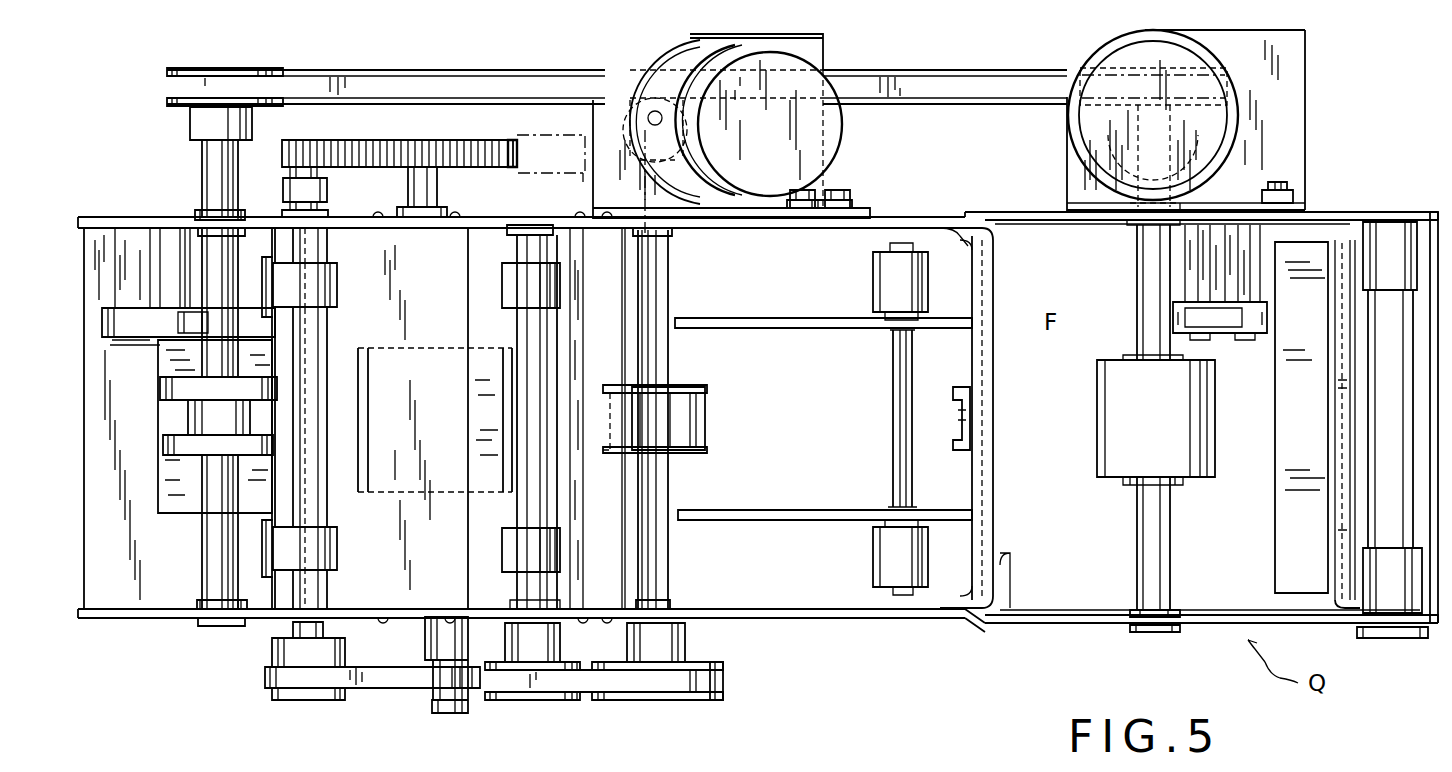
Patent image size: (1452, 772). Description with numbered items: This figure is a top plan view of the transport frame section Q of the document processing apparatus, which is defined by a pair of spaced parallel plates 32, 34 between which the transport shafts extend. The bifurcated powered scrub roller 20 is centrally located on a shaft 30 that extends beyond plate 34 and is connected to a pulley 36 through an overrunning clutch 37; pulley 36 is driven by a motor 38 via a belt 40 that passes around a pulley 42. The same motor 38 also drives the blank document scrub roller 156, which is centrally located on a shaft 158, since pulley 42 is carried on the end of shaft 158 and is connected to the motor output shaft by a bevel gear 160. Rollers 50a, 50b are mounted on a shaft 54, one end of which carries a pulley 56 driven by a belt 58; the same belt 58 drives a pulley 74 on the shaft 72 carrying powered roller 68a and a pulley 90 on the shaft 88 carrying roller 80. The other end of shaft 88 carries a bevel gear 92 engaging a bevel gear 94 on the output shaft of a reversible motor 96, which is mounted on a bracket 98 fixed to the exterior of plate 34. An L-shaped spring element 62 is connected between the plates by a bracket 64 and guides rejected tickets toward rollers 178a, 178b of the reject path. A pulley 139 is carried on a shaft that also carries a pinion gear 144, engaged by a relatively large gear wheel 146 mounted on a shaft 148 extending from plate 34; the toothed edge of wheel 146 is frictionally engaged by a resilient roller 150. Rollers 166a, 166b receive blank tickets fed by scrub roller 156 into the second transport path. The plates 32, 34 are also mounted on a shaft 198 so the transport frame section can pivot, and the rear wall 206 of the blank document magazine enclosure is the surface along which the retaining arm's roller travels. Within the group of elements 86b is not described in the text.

The bifurcated powered scrub roller 20 is at (172, 448).
The shaft 30 is at (218, 547).
The plate 32 is at (138, 620).
The plate 34 is at (110, 217).
The pulley 36 is at (187, 67).
The overrunning clutch 37 is at (210, 121).
The motor 38 is at (1242, 124).
The belt 40 is at (350, 80).
The pulley 42 is at (1235, 46).
The roller 50a is at (332, 552).
The roller 50b is at (332, 283).
The shaft 54 is at (316, 376).
The pulley 56 is at (290, 647).
The belt 58 is at (397, 680).
The L-shaped spring element 62 is at (492, 367).
The bracket 64 is at (466, 242).
The powered roller 68a is at (520, 553).
The shaft 72 is at (532, 398).
The pulley 74 is at (518, 700).
The roller 80 is at (692, 400).
The upper bearing block 86b is at (527, 287).
The shaft 88 is at (655, 481).
The pulley 90 is at (703, 663).
The bevel gear 92 is at (707, 150).
The bevel gear 94 is at (632, 58).
The reversible motor 96 is at (810, 128).
The bracket 98 is at (862, 212).
The pulley 139 is at (330, 186).
The pinion gear 144 is at (306, 147).
The gear wheel 146 is at (452, 147).
The shaft 148 is at (437, 187).
The roller 150 is at (533, 150).
The powered scrub roller 156 is at (1117, 453).
The shaft 158 is at (1165, 542).
The bevel gear 160 is at (1112, 148).
The roller 166a is at (887, 556).
The roller 166b is at (893, 275).
The roller 178a is at (256, 560).
The roller 178b is at (258, 262).
The shaft 198 is at (1387, 375).
The rear wall 206 is at (1343, 440).